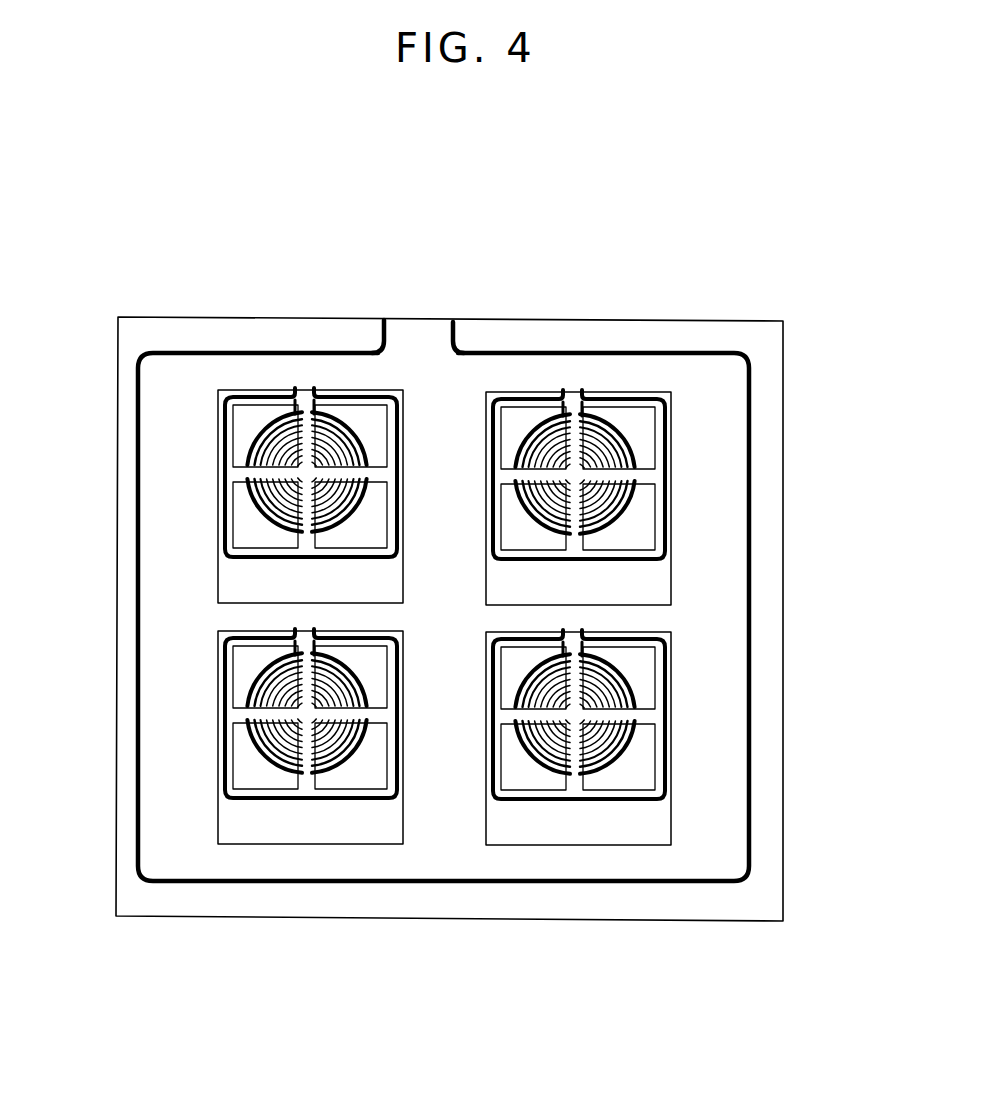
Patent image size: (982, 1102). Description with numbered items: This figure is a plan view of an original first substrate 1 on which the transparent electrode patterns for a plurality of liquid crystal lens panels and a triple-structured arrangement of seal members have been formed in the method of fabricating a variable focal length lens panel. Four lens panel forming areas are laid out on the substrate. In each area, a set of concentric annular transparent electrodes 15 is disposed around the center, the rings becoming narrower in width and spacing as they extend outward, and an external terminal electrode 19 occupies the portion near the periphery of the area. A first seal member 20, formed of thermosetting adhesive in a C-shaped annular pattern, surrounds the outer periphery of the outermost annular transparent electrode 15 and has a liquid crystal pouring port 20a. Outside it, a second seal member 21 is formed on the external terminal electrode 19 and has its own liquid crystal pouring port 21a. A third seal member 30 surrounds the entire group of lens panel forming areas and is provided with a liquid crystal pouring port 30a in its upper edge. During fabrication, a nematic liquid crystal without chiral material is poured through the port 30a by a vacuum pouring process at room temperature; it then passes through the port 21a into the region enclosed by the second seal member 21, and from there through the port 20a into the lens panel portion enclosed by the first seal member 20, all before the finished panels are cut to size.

The original first substrate 1 is at (243, 335).
The annular transparent electrodes 15 is at (263, 433).
The external terminal electrode 19 is at (230, 579).
The first seal member 20 is at (245, 449).
The liquid crystal pouring port of the first seal member 20a is at (313, 397).
The second seal member 21 is at (222, 515).
The liquid crystal pouring port of the second seal member 21a is at (291, 397).
The third seal member 30 is at (490, 353).
The liquid crystal pouring port of the third seal member 30a is at (418, 327).